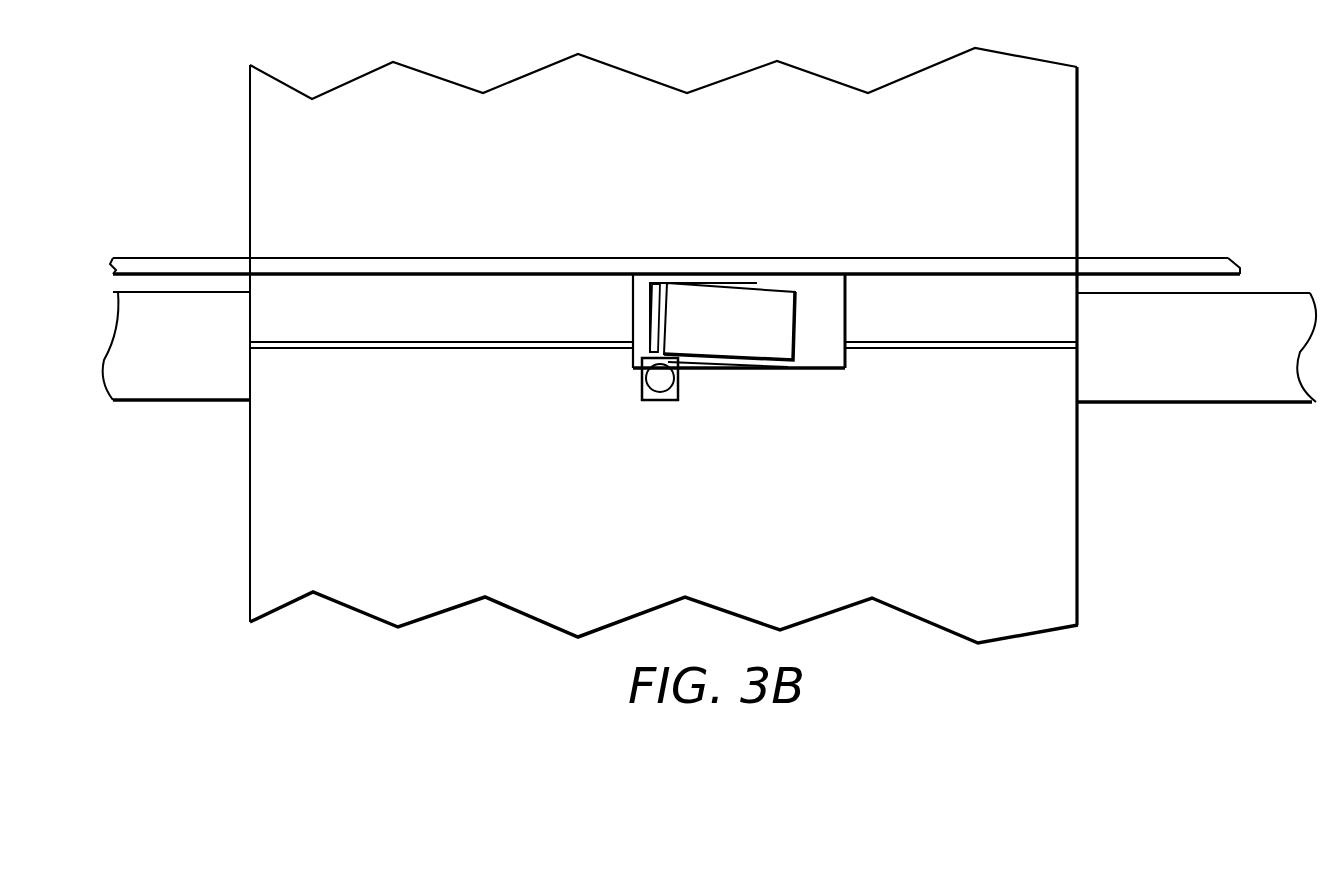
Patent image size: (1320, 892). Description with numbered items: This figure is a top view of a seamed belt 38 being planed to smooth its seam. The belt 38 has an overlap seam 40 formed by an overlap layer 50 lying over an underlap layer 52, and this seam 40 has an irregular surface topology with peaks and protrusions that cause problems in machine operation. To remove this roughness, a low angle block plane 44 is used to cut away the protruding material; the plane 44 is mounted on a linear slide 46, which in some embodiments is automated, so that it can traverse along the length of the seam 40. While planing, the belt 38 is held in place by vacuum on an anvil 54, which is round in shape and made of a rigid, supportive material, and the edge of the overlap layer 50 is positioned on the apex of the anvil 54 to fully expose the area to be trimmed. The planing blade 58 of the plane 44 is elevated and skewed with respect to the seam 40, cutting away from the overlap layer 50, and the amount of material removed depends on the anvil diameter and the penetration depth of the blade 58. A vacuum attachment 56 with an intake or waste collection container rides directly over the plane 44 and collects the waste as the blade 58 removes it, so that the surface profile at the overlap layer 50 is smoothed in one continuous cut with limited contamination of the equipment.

The seamed belt 38 is at (262, 153).
The overlap seam 40 is at (410, 350).
The low angle block plane 44 is at (832, 315).
The linear slide 46 is at (465, 262).
The overlap layer 50 is at (1061, 326).
The underlap layer 52 is at (1061, 392).
The anvil 54 is at (1199, 363).
The vacuum attachment 56 is at (664, 386).
The planing blade 58 is at (741, 338).